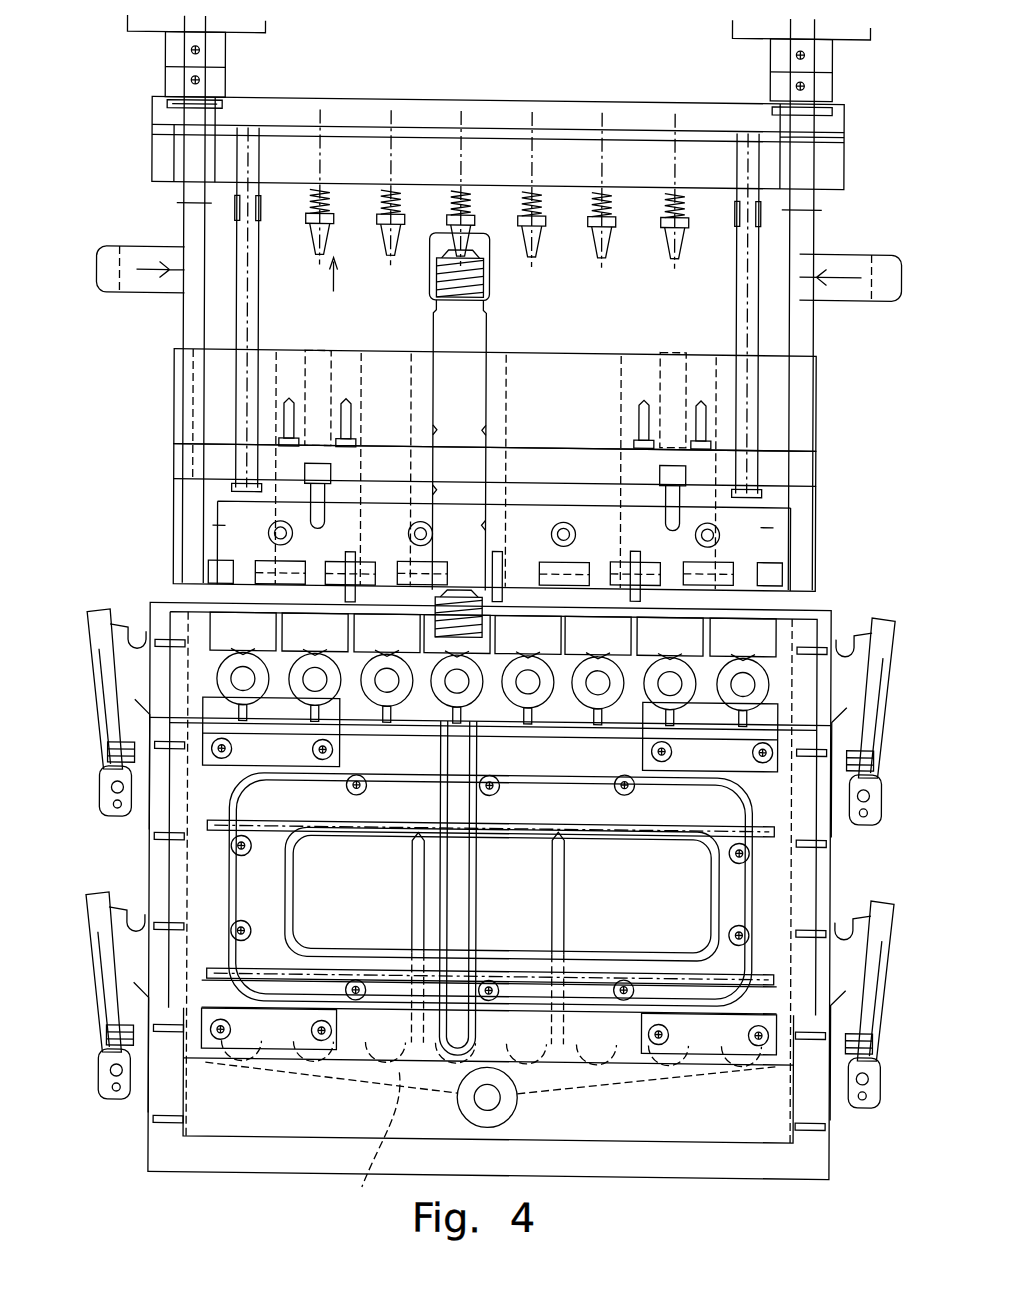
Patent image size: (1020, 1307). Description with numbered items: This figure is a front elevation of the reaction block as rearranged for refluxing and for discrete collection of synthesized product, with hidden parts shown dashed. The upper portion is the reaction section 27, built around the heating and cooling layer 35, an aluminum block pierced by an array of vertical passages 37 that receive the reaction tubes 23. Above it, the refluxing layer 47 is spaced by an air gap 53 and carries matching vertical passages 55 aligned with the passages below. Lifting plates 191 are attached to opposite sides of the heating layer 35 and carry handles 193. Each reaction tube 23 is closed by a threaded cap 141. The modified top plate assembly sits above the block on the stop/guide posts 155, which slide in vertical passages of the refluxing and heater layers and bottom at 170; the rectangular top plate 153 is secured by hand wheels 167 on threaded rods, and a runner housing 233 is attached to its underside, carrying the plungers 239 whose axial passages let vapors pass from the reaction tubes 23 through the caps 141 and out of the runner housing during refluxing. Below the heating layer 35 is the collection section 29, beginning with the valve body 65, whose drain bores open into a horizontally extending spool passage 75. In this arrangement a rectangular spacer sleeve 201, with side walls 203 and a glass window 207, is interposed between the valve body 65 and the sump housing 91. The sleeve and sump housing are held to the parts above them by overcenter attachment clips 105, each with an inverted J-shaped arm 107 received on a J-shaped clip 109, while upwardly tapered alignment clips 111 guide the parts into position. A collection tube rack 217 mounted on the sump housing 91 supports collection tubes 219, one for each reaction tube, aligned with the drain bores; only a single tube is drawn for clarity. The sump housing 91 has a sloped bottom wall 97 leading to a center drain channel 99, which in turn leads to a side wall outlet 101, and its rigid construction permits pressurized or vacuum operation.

The hand wheels 167 is at (265, 20).
The top plate 153 is at (556, 105).
The runner housing 233 is at (832, 164).
The handles 193 is at (100, 250).
The lifting plates 191 is at (182, 316).
The stop/guide posts 155 is at (250, 302).
The plungers 239 is at (333, 285).
The threaded cap 141 is at (483, 247).
The reaction tubes 23 is at (478, 315).
The vertical passages 55 is at (361, 373).
The refluxing layer 47 is at (195, 389).
The bottoming point of stop/guide posts 170 is at (243, 470).
The air gap 53 is at (770, 452).
The vertical passages 37 is at (359, 488).
The reaction section 27 is at (146, 489).
The heating and cooling layer 35 is at (190, 501).
The valve body 65 is at (805, 620).
The spool passage 75 is at (241, 676).
The J-shaped clips 109 is at (143, 624).
The inverted J-shaped arm 107 is at (110, 658).
The alignment clips 111 is at (140, 718).
The overcenter attachment clips 105 is at (108, 781).
The window 207 is at (317, 884).
The spacer sleeve 201 is at (820, 862).
The side walls 203 is at (820, 882).
The collection tubes 219 is at (479, 921).
The collection tube rack 217 is at (569, 885).
The collection section 29 is at (123, 1163).
The sloped bottom wall 97 is at (376, 1142).
The side wall outlet 101 is at (502, 1102).
The center drain channel 99 is at (489, 1094).
The sump housing 91 is at (829, 1152).